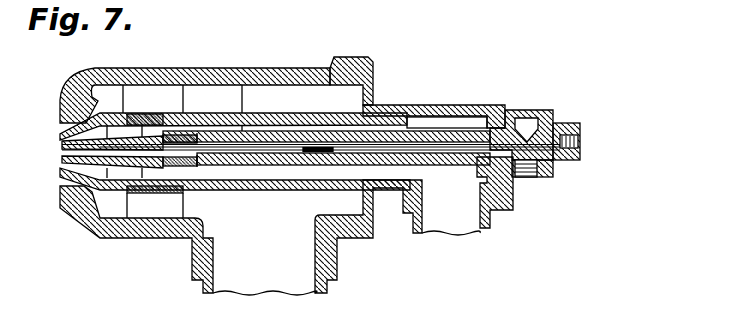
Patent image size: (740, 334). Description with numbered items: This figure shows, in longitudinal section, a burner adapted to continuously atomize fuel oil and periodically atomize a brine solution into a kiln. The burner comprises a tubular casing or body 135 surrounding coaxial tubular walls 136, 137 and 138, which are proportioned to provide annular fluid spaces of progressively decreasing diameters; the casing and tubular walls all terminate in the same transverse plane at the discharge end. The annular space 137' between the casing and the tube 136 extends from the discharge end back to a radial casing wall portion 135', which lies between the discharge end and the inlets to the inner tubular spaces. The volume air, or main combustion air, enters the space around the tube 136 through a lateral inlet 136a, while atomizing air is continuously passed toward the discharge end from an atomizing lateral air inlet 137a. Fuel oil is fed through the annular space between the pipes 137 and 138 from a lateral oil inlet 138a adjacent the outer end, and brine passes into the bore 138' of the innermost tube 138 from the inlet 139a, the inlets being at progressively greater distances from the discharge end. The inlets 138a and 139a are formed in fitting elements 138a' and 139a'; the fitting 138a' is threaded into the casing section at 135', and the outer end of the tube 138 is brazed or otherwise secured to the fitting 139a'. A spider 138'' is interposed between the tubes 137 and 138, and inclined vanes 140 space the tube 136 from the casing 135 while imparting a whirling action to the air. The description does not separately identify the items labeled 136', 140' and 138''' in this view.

The vanes 140 is at (195, 84).
The inner sleeve 136' is at (175, 85).
The annular space 137' is at (258, 88).
The housing pocket 140' is at (117, 137).
The tubular wall 136 is at (233, 118).
The tubular wall 137 is at (311, 124).
The radial casing wall portion 135' is at (383, 73).
The upper tube sleeve 138''' is at (276, 110).
The tubular casing 135 is at (434, 99).
The tubular wall 138 is at (521, 108).
The fitting element 138a' is at (542, 121).
The inlet 139a is at (596, 125).
The fitting element 139a' is at (593, 171).
The lateral oil inlet 138a is at (534, 189).
The spider 138'' is at (155, 175).
The bore 138' is at (343, 185).
The lateral inlet 136a is at (192, 260).
The atomizing lateral air inlet 137a is at (455, 222).